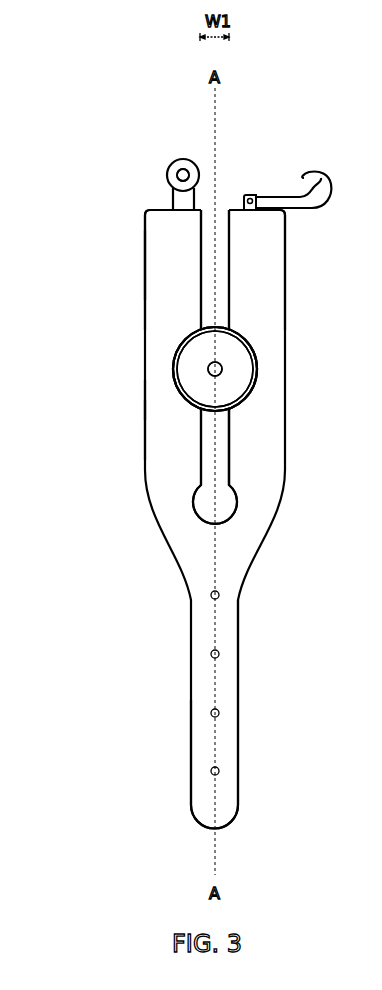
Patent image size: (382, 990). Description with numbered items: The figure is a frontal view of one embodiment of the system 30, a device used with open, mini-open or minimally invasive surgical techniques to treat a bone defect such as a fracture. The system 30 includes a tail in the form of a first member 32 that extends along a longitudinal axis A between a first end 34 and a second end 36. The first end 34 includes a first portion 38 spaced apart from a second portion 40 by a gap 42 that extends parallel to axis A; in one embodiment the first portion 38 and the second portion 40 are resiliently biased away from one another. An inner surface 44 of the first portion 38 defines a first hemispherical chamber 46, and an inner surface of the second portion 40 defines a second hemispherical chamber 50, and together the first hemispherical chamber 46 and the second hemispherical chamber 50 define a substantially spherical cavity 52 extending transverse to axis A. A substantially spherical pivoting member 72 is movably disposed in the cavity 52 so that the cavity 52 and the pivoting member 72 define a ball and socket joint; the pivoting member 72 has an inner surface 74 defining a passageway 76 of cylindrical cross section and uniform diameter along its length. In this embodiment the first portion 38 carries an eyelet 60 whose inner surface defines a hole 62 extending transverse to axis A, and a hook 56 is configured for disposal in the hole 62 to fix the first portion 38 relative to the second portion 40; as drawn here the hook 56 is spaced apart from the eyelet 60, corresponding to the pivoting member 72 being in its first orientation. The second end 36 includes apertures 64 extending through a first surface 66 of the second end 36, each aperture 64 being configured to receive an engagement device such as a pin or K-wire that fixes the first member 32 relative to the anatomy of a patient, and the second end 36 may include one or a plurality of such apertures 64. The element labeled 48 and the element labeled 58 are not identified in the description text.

The system 30 is at (353, 527).
The first member 32 is at (115, 434).
The first end 34 is at (143, 232).
The second end 36 is at (238, 775).
The first portion 38 is at (145, 265).
The second portion 40 is at (275, 275).
The gap 42 is at (218, 212).
The inner surface 44 is at (210, 452).
The first hemispherical chamber 46 is at (165, 324).
The slot edge 48 is at (222, 443).
The second hemispherical chamber 50 is at (268, 348).
The spherical cavity 52 is at (163, 404).
The hook 56 is at (328, 190).
The hinge pin 58 is at (251, 197).
The eyelet 60 is at (189, 159).
The hole 62 is at (177, 172).
The aperture 64 is at (211, 597).
The first surface 66 is at (238, 620).
The pivoting member 72 is at (232, 342).
The inner surface 74 is at (208, 368).
The passageway 76 is at (232, 386).